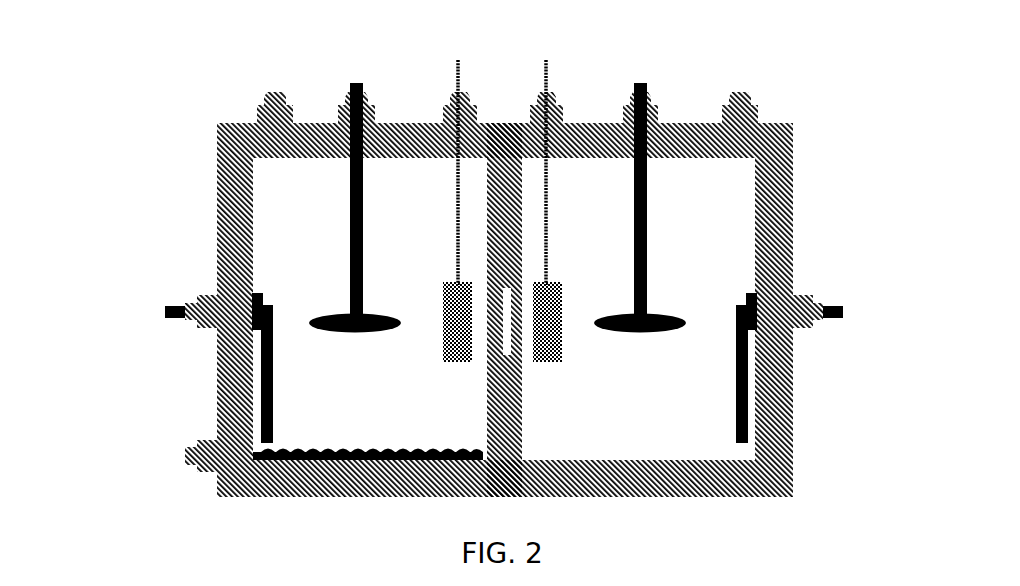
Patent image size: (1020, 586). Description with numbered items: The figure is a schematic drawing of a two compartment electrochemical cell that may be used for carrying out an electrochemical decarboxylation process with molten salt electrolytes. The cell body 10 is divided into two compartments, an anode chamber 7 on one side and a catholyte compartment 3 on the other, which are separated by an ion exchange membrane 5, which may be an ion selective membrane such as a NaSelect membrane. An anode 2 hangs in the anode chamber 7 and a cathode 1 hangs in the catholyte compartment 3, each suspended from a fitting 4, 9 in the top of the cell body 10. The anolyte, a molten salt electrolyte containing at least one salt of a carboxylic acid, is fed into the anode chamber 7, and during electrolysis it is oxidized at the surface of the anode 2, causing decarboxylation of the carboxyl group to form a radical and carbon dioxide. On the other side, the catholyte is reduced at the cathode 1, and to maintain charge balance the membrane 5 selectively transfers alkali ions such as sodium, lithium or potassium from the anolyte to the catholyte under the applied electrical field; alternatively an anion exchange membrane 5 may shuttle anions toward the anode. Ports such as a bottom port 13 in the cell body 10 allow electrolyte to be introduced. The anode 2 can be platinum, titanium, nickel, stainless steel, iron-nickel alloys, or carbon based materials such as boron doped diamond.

The cathode 1 is at (552, 185).
The anode 2 is at (455, 185).
The catholyte compartment 3 is at (719, 237).
The fitting / gland 4 is at (268, 83).
The ion exchange membrane 5 is at (505, 285).
The anode chamber 7 is at (285, 242).
The fitting / gland 9 is at (741, 83).
The housing body 10 is at (796, 142).
The bottom port 13 is at (183, 455).